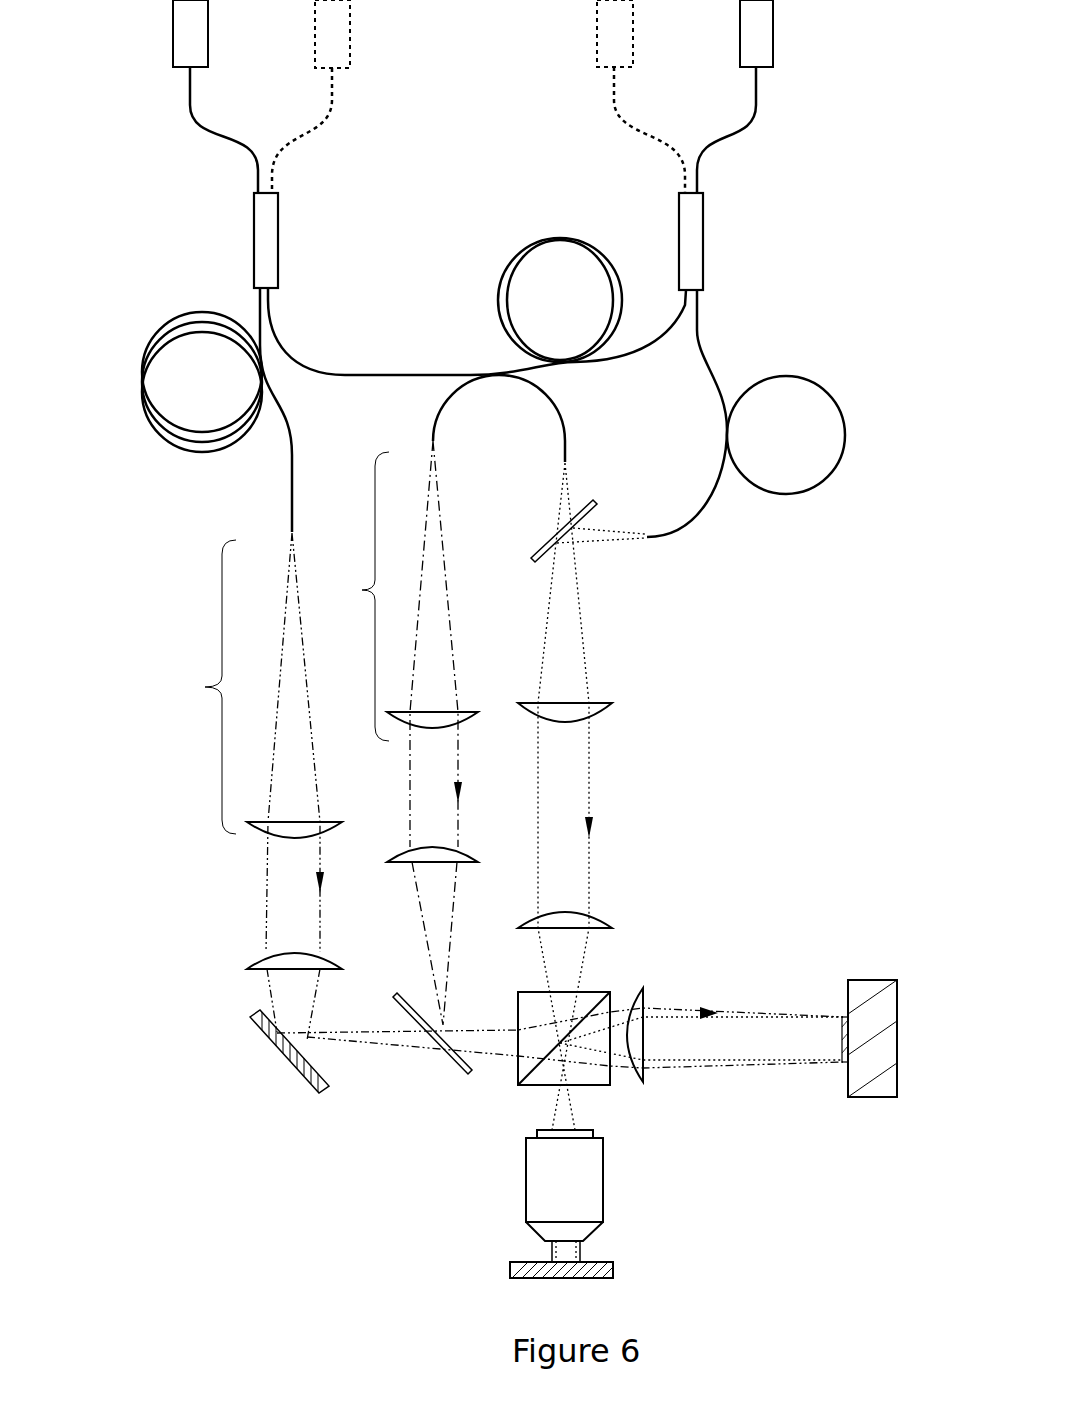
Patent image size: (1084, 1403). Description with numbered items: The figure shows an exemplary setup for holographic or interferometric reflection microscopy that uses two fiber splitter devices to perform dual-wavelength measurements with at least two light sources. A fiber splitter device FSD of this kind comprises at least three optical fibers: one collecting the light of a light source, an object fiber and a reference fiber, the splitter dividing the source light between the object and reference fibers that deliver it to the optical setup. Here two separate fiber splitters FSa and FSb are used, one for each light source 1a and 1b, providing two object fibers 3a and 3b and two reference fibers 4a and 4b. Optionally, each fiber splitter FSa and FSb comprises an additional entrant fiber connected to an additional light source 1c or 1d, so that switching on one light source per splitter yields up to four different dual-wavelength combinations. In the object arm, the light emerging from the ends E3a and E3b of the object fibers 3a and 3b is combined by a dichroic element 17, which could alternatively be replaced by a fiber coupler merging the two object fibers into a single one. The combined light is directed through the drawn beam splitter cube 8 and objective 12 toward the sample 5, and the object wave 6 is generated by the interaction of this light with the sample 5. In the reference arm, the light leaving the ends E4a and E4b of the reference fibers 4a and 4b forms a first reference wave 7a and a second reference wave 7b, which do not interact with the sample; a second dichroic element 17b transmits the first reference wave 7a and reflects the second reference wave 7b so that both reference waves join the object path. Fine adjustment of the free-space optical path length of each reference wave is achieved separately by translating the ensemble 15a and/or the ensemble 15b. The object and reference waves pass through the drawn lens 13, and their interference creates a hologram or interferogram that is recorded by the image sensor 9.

The light source 1a is at (183, 33).
The light source 1b is at (758, 37).
The additional light source 1c is at (326, 33).
The additional light source 1d is at (607, 33).
The fiber splitter FSa is at (254, 250).
The fiber splitter FSb is at (679, 248).
The fiber splitter device FSD is at (815, 268).
The object fiber 3a is at (293, 347).
The object fiber 3b is at (828, 388).
The reference fiber 4a is at (160, 440).
The reference fiber 4b is at (512, 253).
The end of reference fiber E4a is at (292, 532).
The end of reference fiber E4b is at (432, 438).
The end of object fiber E3a is at (567, 462).
The end of object fiber E3b is at (647, 542).
The dichroic element 17 is at (598, 504).
The dichroic element 17b is at (452, 1063).
The ensemble 15a is at (239, 742).
The ensemble 15b is at (394, 651).
The first reference wave 7a is at (268, 928).
The second reference wave 7b is at (430, 940).
The beam splitter cube 8 is at (526, 1085).
The lens 13 is at (645, 1080).
The object wave 6 is at (670, 1017).
The image sensor 9 is at (840, 1015).
The objective 12 is at (593, 1172).
The sample 5 is at (515, 1272).